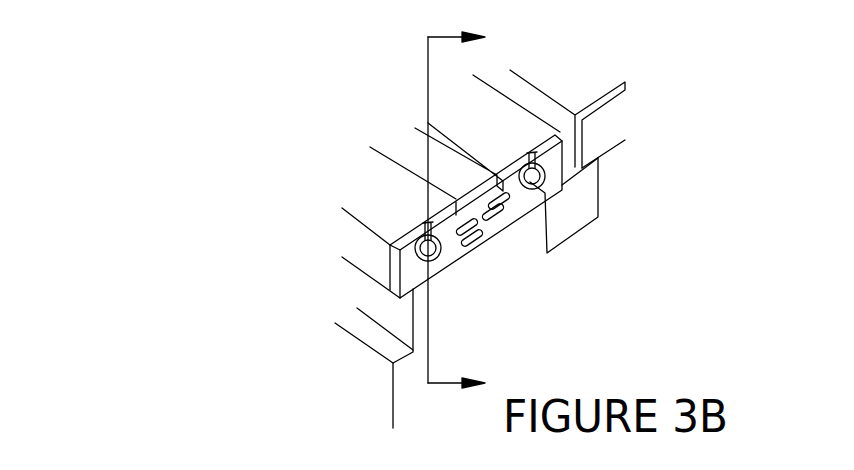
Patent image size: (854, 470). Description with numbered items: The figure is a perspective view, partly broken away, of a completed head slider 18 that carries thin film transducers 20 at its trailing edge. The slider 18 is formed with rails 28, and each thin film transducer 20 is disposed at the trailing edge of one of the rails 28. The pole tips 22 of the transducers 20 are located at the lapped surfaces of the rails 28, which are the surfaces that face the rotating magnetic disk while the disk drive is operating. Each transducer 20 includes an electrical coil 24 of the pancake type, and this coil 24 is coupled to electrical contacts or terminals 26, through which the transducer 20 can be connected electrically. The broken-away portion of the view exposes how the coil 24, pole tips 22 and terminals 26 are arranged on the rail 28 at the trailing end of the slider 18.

The slider 18 is at (638, 259).
The thin film transducer 20 is at (442, 267).
The pole tip 22 is at (425, 218).
The electrical coil 24 is at (443, 263).
The electrical contacts or terminals 26 is at (506, 221).
The rail 28 is at (388, 213).